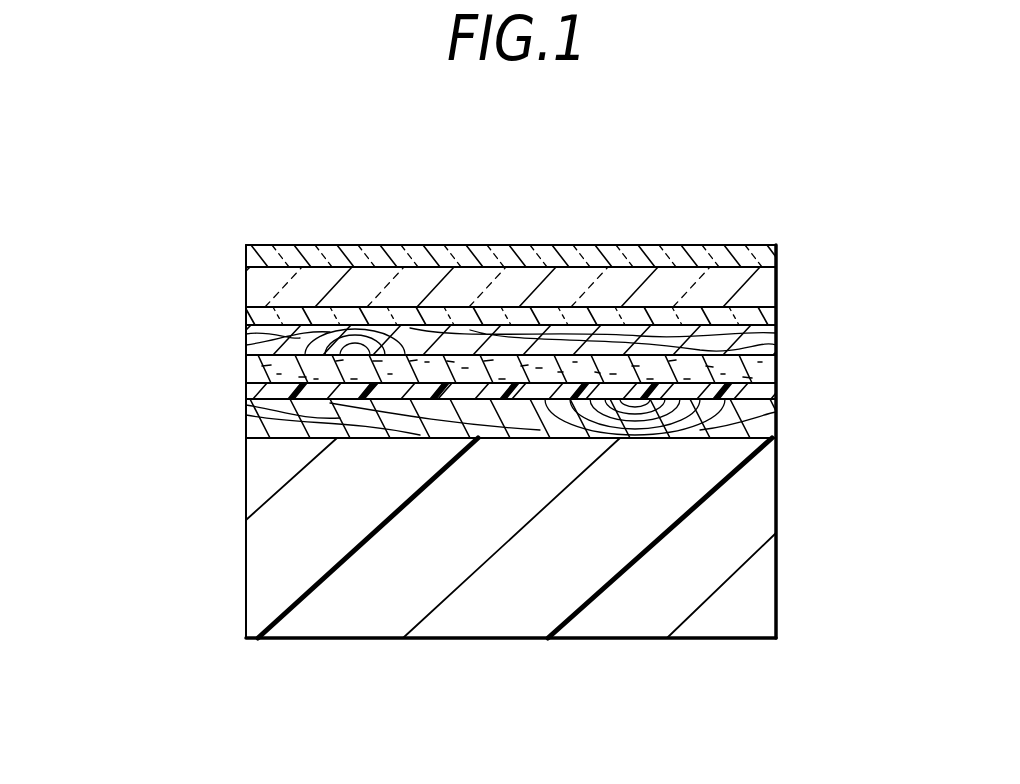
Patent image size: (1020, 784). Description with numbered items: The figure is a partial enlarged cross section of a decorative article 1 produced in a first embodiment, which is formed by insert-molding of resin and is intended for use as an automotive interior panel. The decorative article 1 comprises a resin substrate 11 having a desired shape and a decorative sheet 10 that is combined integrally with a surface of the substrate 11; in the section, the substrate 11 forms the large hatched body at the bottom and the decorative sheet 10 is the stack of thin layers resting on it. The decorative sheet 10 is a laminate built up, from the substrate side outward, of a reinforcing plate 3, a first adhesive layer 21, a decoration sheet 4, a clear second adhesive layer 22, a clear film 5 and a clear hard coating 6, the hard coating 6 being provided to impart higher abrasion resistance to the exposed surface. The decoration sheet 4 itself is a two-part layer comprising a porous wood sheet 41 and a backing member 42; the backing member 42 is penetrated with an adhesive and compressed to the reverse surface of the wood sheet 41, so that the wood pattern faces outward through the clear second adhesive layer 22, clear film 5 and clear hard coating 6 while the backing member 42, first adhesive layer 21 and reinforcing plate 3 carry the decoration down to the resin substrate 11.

The decorative article 1 is at (525, 230).
The decorative sheet 10 is at (232, 247).
The clear hard coating 6 is at (655, 247).
The clear film 5 is at (752, 290).
The second adhesive layer 22 is at (757, 318).
The decoration sheet 4 is at (838, 327).
The porous wood sheet 41 is at (777, 337).
The backing member 42 is at (778, 368).
The first adhesive layer 21 is at (778, 390).
The reinforcing plate 3 is at (670, 437).
The substrate 11 is at (272, 575).